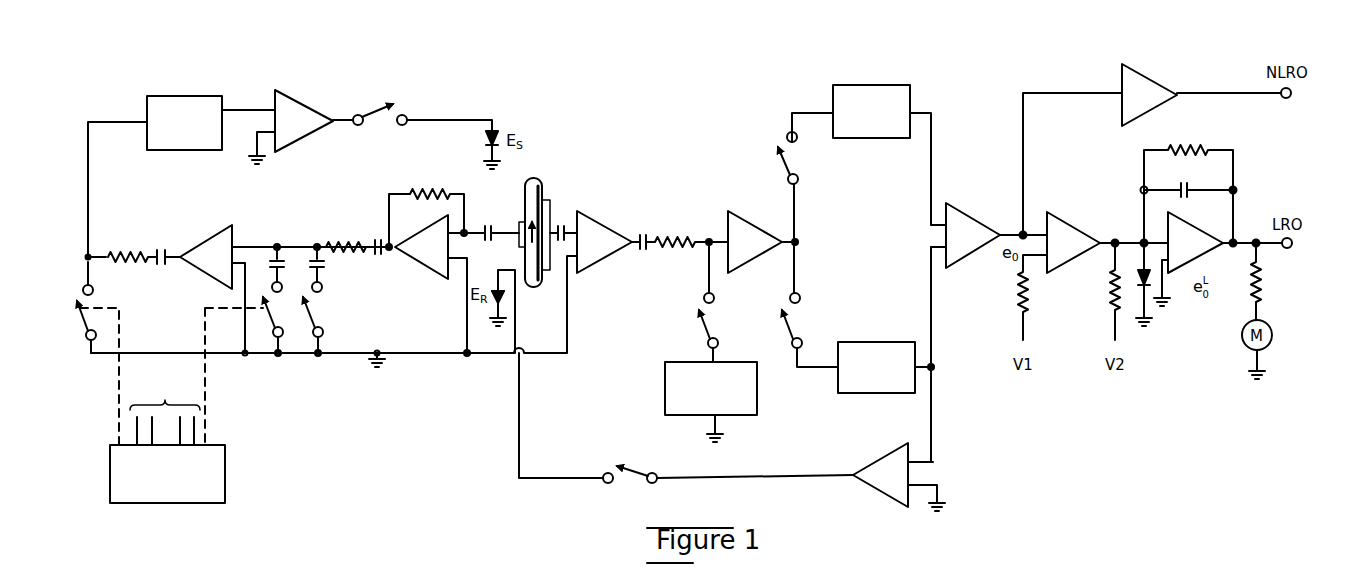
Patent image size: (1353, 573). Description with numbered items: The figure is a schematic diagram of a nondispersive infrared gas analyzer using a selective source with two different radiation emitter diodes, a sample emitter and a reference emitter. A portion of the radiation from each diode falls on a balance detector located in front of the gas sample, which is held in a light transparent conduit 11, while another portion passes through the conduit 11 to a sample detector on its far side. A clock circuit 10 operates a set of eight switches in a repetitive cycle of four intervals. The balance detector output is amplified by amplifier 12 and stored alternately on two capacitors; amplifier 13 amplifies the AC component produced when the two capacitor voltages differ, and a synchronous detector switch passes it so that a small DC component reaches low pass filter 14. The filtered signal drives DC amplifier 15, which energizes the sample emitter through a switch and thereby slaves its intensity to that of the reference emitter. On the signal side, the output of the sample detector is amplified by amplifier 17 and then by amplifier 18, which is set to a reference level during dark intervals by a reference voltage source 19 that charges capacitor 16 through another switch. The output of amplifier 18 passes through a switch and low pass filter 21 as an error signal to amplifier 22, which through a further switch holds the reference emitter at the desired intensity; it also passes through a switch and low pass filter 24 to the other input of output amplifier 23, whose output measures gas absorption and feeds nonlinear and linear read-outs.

The clock circuit 10 is at (225, 475).
The conduit 11 is at (532, 220).
The amplifier 12 is at (432, 272).
The amplifier 13 is at (208, 232).
The low pass filter 14 is at (140, 96).
The DC amplifier 15 is at (288, 96).
The capacitor 16 is at (651, 229).
The amplifier 17 is at (628, 215).
The amplifier 18 is at (750, 219).
The reference voltage source 19 is at (665, 363).
The low pass filter 21 is at (895, 342).
The amplifier 22 is at (900, 445).
The output amplifier 23 is at (947, 205).
The low pass filter 24 is at (903, 85).